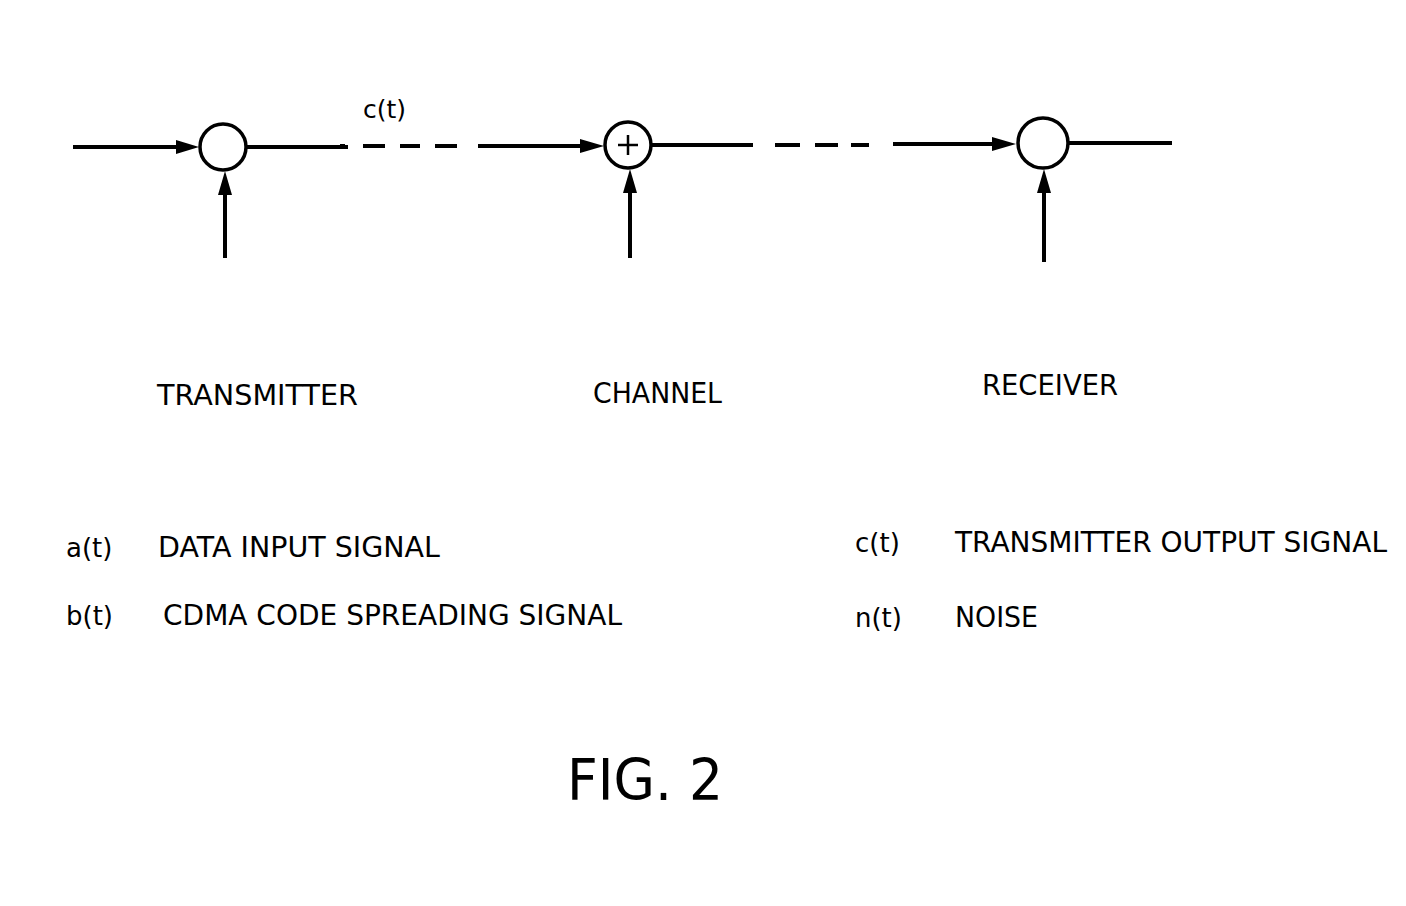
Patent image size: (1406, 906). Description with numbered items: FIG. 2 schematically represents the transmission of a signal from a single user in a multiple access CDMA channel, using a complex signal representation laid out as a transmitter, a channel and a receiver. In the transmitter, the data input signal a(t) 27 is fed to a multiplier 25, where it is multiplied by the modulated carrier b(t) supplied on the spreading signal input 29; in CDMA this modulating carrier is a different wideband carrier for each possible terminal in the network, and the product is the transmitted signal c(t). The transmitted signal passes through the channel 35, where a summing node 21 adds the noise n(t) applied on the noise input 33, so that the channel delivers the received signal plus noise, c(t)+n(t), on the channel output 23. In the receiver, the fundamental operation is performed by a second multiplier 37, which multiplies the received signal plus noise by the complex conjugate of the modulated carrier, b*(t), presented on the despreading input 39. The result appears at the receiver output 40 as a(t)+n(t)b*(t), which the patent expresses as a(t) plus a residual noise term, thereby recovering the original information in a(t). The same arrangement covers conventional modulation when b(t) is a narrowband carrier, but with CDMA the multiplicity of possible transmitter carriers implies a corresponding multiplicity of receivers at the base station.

The channel summing node (noise adder) 21 is at (624, 120).
The channel output signal c(t)+n(t) 23 is at (643, 122).
The transmitter multiplier (spreader) 25 is at (232, 125).
The data input signal line a(t) 27 is at (172, 150).
The CDMA code spreading signal input b(t) 29 is at (230, 226).
The noise input n(t) 33 is at (627, 203).
The transmission channel 35 is at (821, 155).
The receiver multiplier (despreader) 37 is at (1045, 118).
The receiver despreading code input b(t) 39 is at (1038, 200).
The receiver output signal 40 is at (1158, 193).